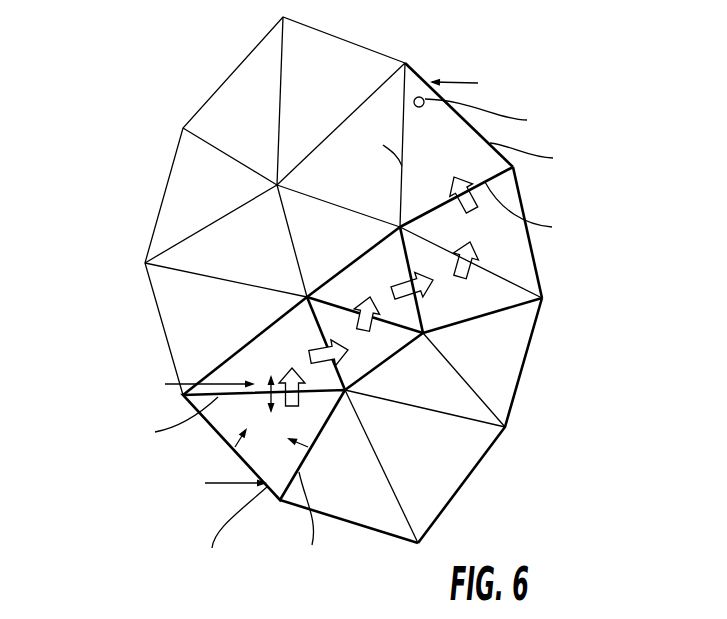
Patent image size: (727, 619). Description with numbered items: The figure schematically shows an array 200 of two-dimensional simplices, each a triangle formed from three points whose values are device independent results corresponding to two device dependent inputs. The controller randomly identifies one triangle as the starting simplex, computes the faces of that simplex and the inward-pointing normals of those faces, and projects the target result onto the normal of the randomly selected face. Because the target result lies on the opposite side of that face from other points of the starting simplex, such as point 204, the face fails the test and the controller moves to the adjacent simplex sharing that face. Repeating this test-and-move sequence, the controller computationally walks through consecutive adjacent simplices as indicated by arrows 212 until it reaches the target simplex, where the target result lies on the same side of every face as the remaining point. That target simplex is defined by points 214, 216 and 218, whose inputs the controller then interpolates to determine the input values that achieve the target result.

The array of simplices 200 is at (78, 113).
The point of simplex T1 204 is at (280, 503).
The arrows 212 is at (467, 261).
The point of simplex T7 214 is at (514, 168).
The point of simplex T7 216 is at (400, 227).
The point of simplex T7 218 is at (405, 63).